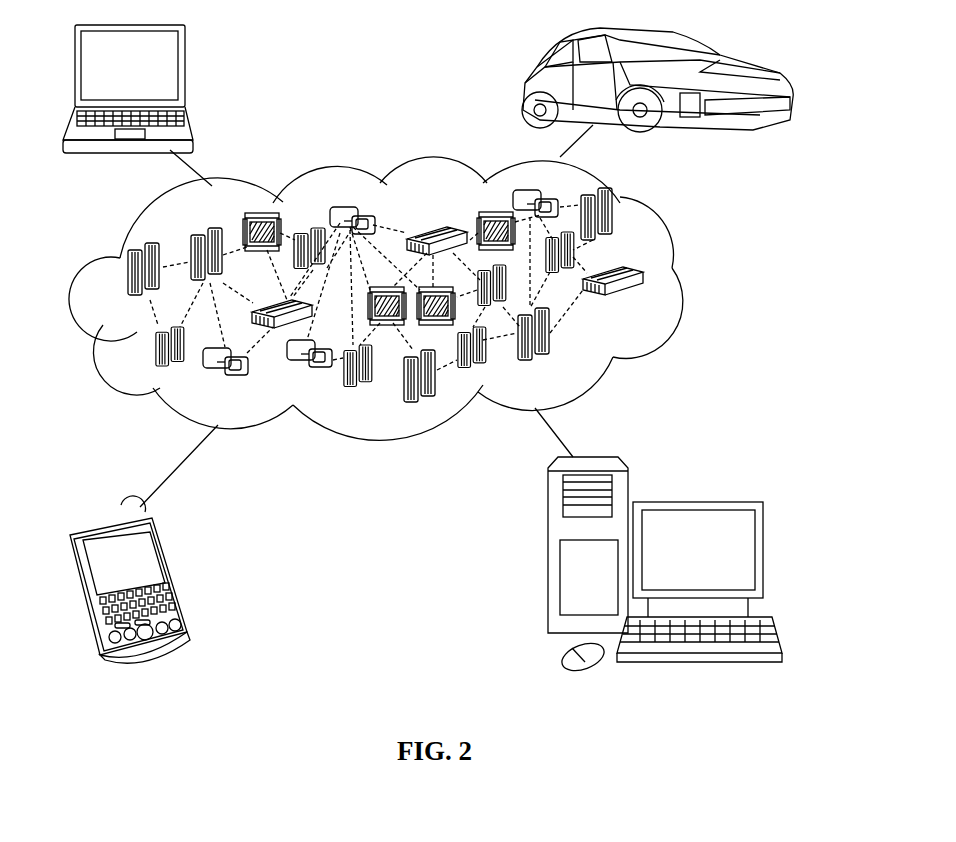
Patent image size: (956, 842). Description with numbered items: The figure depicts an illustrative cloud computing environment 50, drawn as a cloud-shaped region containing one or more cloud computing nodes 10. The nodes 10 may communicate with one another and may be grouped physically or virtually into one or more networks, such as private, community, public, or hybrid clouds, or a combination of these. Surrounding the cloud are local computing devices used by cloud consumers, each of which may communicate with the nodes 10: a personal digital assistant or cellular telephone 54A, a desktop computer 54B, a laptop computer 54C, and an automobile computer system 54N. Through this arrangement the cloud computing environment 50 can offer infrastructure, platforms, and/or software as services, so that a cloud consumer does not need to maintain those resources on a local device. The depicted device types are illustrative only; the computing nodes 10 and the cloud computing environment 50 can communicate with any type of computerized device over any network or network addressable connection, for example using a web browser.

The cloud computing nodes 10 is at (653, 304).
The cloud computing environment 50 is at (697, 281).
The personal digital assistant (PDA) or cellular telephone 54A is at (177, 570).
The desktop computer 54B is at (693, 502).
The laptop computer 54C is at (185, 72).
The automobile computer system 54N is at (525, 80).